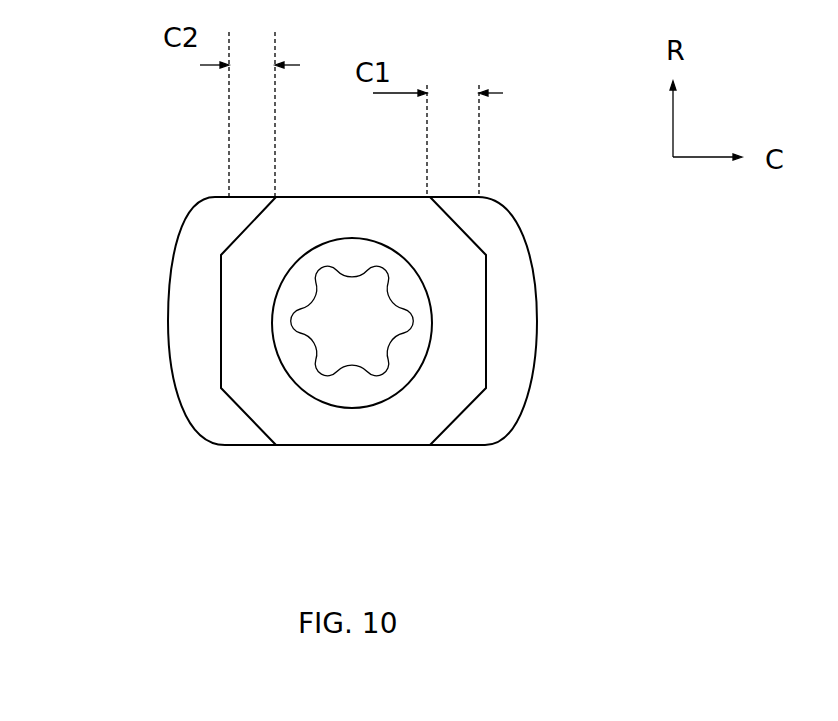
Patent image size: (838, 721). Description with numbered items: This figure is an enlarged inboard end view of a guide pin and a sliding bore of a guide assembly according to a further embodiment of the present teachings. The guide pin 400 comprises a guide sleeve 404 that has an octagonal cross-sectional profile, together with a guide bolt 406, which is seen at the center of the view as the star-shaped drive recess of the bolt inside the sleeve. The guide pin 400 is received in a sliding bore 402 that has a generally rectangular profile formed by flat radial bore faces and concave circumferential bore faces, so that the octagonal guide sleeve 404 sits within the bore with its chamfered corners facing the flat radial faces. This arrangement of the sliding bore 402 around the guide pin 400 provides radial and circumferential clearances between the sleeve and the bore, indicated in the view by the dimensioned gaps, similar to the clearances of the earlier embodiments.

The guide pin 400 is at (475, 437).
The sliding bore 402 is at (247, 200).
The guide sleeve 404 is at (443, 248).
The guide bolt 406 is at (380, 302).